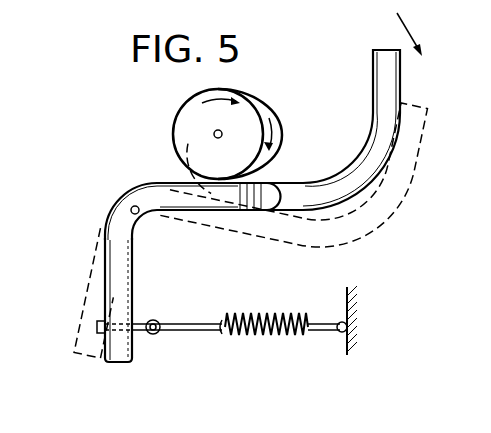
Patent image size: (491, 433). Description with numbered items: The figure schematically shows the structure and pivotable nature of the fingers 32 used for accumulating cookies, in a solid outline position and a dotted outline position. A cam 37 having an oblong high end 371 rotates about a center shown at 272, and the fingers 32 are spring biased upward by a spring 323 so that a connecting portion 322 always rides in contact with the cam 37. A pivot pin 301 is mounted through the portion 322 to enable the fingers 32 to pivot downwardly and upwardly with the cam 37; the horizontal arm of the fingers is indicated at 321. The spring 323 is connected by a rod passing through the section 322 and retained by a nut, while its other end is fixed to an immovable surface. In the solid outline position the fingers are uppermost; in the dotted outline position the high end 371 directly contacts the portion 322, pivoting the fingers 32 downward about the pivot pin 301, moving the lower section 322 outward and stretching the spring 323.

The fingers 32 is at (402, 80).
The handle horizontal portion 321 is at (166, 182).
The connecting portion 322 is at (98, 263).
The spring 323 is at (222, 334).
The pivot pin 301 is at (131, 208).
The cam 37 is at (176, 133).
The oblong high end 371 is at (281, 136).
The wheel axle 272 is at (216, 131).